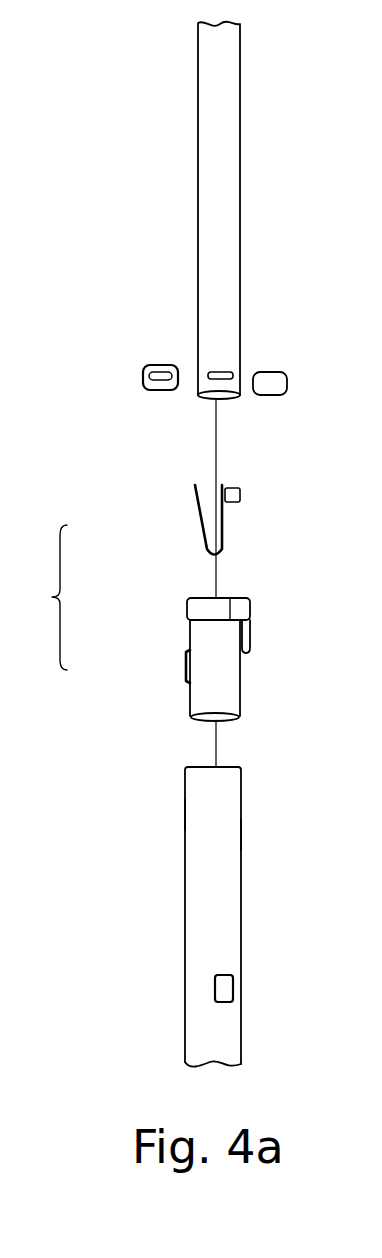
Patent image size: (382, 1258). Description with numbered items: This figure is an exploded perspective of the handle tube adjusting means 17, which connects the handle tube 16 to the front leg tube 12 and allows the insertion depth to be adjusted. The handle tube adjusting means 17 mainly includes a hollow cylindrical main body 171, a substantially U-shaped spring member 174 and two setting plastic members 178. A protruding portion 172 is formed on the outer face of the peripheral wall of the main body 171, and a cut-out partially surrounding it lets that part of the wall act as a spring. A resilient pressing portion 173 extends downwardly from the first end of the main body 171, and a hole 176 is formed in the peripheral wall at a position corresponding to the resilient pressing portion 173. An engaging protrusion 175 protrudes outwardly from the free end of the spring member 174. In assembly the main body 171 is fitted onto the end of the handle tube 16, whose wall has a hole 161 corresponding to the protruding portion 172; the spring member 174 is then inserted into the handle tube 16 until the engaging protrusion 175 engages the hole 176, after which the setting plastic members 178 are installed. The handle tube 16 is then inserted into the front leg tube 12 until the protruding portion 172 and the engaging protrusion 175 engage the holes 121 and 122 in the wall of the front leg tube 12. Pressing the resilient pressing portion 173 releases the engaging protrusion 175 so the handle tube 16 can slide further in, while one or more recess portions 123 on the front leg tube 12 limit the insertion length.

The front leg tube 12 is at (188, 994).
The hole 121 is at (186, 815).
The hole 122 is at (233, 835).
The recess portion 123 is at (227, 989).
The handle tube 16 is at (233, 228).
The hole 161 is at (197, 330).
The handle tube adjusting means 17 is at (182, 608).
The main body 171 is at (197, 698).
The protruding portion 172 is at (186, 664).
The resilient pressing portion 173 is at (252, 627).
The substantially U-shaped spring member 174 is at (196, 508).
The engaging protrusion 175 is at (240, 497).
The hole 176 is at (252, 648).
The setting plastic member 178 is at (160, 391).